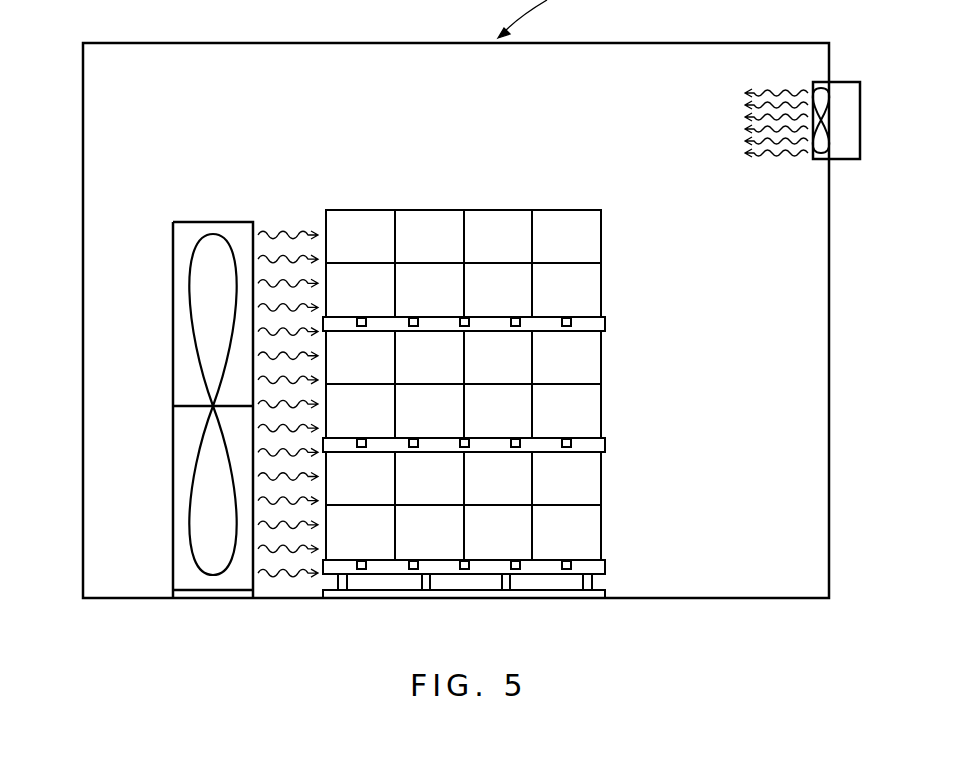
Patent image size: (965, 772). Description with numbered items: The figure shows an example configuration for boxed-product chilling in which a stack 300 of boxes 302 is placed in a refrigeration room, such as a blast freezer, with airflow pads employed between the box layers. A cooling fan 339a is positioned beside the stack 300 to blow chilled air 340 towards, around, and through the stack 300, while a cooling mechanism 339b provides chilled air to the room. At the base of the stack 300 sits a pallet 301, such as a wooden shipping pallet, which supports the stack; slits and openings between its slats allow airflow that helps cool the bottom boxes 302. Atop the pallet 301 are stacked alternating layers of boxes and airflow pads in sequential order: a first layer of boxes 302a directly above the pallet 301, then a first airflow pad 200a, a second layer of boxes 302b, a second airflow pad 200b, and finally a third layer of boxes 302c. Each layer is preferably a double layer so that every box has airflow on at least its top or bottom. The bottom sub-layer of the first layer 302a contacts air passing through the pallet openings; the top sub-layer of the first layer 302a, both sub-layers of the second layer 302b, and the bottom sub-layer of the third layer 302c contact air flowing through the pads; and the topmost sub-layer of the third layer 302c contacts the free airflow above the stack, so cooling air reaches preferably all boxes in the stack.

The stack 300 is at (600, 182).
The pallet 301 is at (614, 577).
The boxes 302 is at (583, 236).
The first layer of boxes 302a is at (614, 503).
The second layer of boxes 302b is at (614, 382).
The third layer of boxes 302c is at (614, 262).
The first airflow pad 200a is at (333, 448).
The second airflow pad 200b is at (333, 328).
The cooling fan 339a is at (212, 471).
The cooling mechanism 339b is at (843, 115).
The chilled air 340 is at (289, 247).